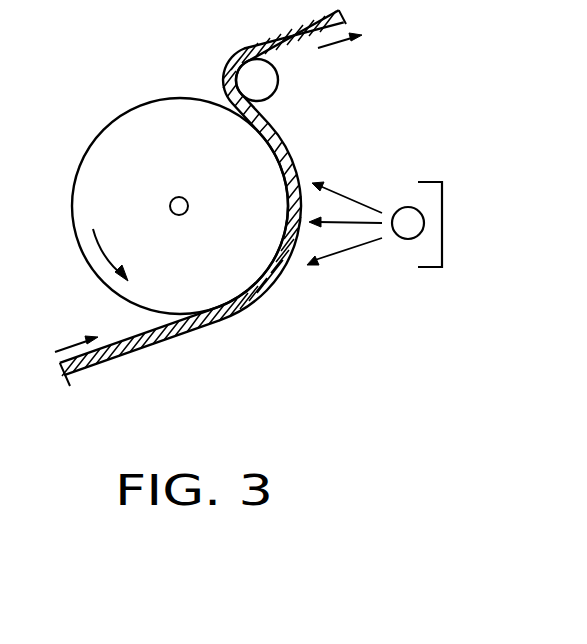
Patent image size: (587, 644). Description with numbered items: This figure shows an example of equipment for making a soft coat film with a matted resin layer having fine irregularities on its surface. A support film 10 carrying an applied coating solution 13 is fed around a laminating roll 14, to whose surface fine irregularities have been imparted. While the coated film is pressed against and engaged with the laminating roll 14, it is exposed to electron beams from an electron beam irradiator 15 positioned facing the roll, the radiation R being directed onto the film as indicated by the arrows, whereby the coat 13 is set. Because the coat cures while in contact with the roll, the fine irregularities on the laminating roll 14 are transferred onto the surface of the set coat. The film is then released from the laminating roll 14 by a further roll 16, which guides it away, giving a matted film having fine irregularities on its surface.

The support film 10 is at (147, 346).
The coating solution 13 is at (128, 338).
The laminating roll 14 is at (112, 122).
The electron beam irradiator 15 is at (413, 228).
The roll 16 is at (278, 83).
The radiation R is at (344, 237).